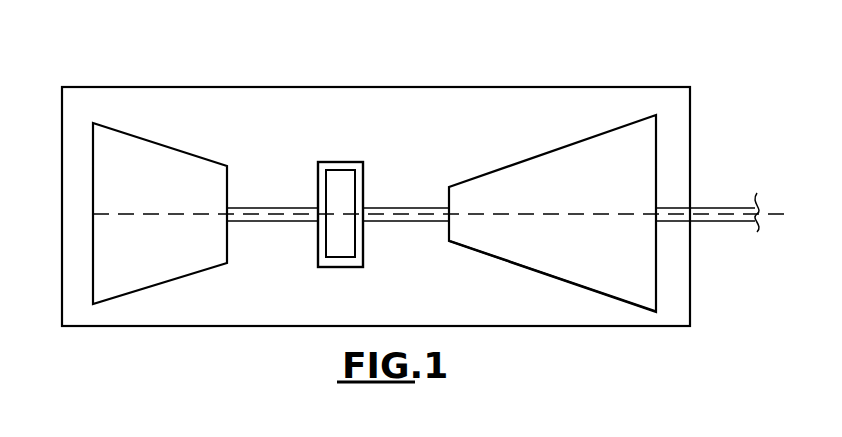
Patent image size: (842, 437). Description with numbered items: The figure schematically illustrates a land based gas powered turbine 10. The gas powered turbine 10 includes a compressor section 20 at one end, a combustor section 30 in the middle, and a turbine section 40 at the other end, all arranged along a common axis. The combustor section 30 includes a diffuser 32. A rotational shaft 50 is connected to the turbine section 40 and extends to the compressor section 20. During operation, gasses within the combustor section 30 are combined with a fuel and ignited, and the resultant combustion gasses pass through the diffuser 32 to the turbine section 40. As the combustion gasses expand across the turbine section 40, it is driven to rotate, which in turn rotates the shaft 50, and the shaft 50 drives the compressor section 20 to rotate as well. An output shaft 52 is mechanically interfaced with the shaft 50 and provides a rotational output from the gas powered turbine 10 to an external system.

The gas powered turbine 10 is at (368, 163).
The compressor section 20 is at (163, 146).
The combustor section 30 is at (355, 162).
The diffuser 32 is at (357, 245).
The turbine section 40 is at (546, 152).
The rotational shaft 50 is at (550, 215).
The output shaft 52 is at (720, 206).